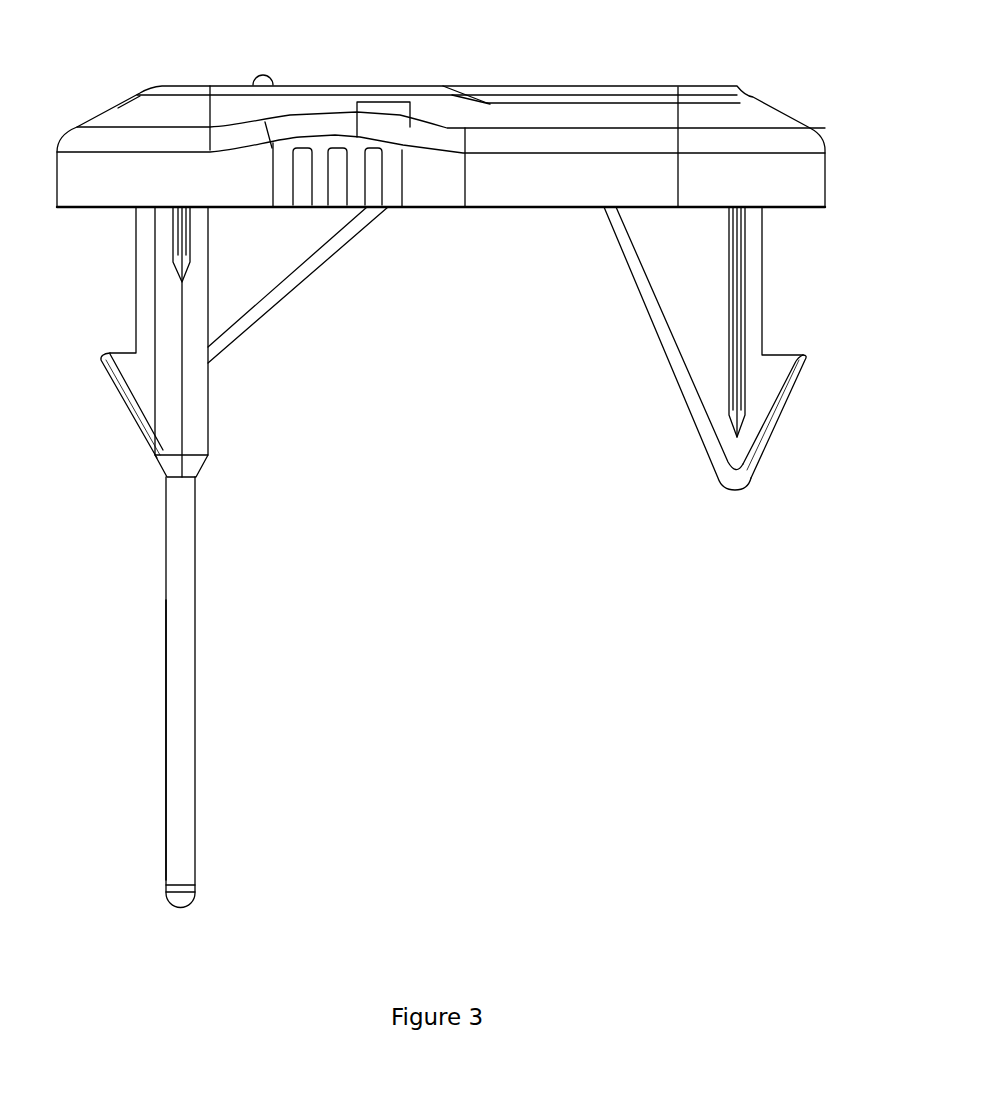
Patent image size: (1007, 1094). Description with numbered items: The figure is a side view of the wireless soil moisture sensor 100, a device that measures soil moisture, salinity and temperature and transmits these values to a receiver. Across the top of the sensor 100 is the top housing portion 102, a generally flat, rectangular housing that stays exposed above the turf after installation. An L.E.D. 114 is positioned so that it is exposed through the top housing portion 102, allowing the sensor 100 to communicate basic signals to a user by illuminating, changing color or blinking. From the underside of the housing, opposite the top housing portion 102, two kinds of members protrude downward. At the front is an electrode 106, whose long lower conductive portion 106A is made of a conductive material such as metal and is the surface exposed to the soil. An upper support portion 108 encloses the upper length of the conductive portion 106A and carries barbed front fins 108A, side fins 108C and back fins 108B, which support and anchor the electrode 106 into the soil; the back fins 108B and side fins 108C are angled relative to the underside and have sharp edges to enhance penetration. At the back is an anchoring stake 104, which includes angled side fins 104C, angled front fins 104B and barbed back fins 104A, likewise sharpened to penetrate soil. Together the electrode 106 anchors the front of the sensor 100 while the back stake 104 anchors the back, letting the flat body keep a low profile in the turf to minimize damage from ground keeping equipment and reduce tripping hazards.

The wireless soil moisture sensor 100 is at (457, 456).
The top housing portion 102 is at (441, 105).
The anchoring member or stake 104 is at (707, 351).
The barbed back fin 104A is at (818, 357).
The angled front fin 104B is at (672, 283).
The angled side fin 104C is at (745, 326).
The electrode 106 is at (248, 692).
The exposed conductive surface 106A is at (198, 717).
The upper support portion 108 is at (212, 356).
The barbed front fin 108A is at (143, 386).
The back fin 108B is at (288, 270).
The side fin 108C is at (180, 243).
The L.E.D. 114 is at (290, 80).